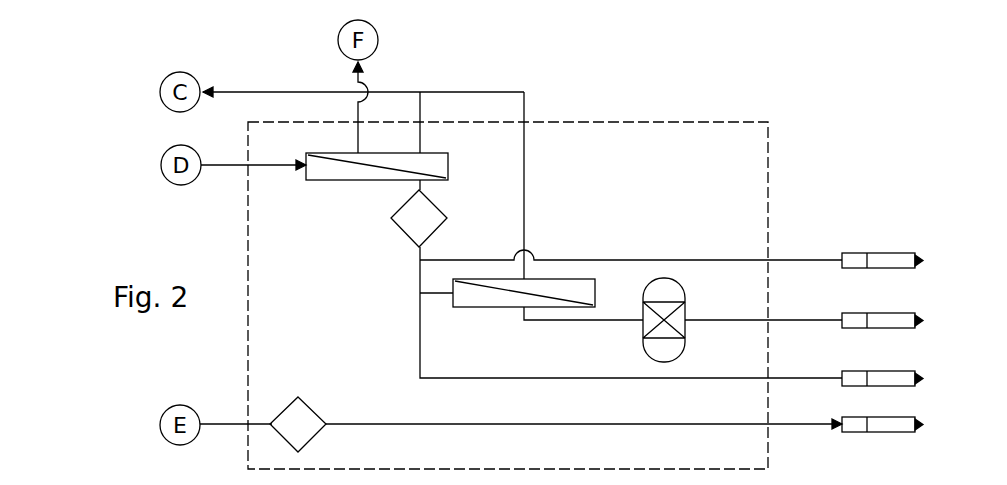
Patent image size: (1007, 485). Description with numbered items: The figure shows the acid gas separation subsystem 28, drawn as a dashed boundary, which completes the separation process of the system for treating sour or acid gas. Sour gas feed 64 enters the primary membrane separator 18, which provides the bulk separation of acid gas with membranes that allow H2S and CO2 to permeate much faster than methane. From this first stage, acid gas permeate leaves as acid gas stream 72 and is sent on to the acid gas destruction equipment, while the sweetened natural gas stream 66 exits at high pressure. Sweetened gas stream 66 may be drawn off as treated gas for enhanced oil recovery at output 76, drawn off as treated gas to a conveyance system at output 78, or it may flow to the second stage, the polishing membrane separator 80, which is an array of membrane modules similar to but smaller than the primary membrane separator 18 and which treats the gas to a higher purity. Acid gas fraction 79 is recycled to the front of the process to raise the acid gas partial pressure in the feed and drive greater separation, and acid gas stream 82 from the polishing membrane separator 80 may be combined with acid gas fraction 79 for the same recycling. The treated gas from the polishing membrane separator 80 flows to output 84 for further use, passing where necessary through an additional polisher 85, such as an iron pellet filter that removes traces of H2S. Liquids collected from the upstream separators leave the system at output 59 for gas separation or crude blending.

The primary membrane separator 18 is at (346, 182).
The acid gas separation subsystem 28 is at (663, 122).
The output 59 is at (915, 416).
The sour gas feed 64 is at (221, 168).
The sweetened natural gas stream 66 is at (420, 316).
The acid gas stream 72 is at (358, 138).
The output 76 is at (915, 252).
The output 78 is at (915, 369).
The acid gas fraction 79 is at (237, 92).
The polishing membrane separator 80 is at (508, 308).
The acid gas stream 82 is at (524, 197).
The output 84 is at (915, 311).
The polisher 85 is at (686, 306).